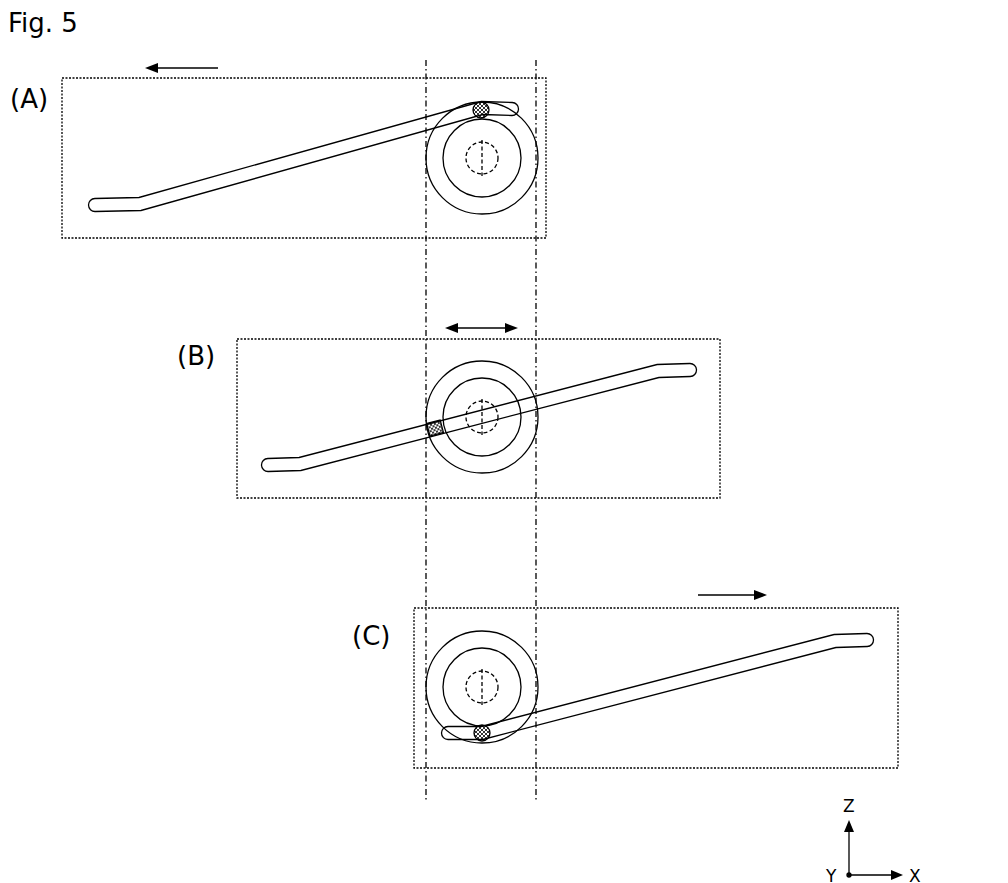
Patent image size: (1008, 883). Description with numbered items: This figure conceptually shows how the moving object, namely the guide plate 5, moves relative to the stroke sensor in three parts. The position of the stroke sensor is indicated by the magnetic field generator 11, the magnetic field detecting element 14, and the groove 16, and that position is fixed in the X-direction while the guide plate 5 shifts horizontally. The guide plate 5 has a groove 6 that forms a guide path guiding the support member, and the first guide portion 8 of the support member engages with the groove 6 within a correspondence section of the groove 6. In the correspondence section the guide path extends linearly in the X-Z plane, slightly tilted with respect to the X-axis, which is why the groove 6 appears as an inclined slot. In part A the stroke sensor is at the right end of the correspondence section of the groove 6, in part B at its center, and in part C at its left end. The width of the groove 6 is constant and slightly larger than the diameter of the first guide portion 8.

The guide plate 5 is at (318, 78).
The groove 6 is at (160, 190).
The first guide portion 8 is at (489, 106).
The magnetic field generator 11 is at (492, 177).
The magnetic field detecting element 14 is at (497, 147).
The groove 16 is at (468, 206).